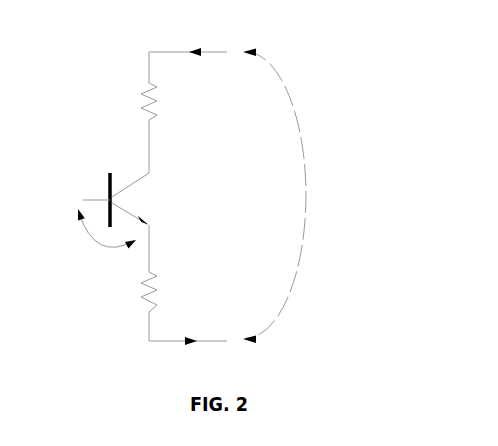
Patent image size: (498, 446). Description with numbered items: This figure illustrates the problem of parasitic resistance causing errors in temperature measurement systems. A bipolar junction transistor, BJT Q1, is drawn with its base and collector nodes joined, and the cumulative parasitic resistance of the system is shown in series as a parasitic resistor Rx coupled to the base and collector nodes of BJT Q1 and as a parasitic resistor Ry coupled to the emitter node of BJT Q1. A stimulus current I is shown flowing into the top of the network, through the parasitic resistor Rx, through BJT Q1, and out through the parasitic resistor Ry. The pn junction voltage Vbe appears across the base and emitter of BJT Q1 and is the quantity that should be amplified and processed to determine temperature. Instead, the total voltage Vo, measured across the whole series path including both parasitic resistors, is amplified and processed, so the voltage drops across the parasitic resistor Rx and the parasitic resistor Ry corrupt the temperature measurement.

The stimulus current I is at (197, 188).
The parasitic resistor Rx is at (135, 101).
The parasitic resistor Ry is at (134, 292).
The BJT Q1 is at (126, 200).
The pn junction voltage Vbe is at (98, 233).
The total voltage Vo is at (288, 196).